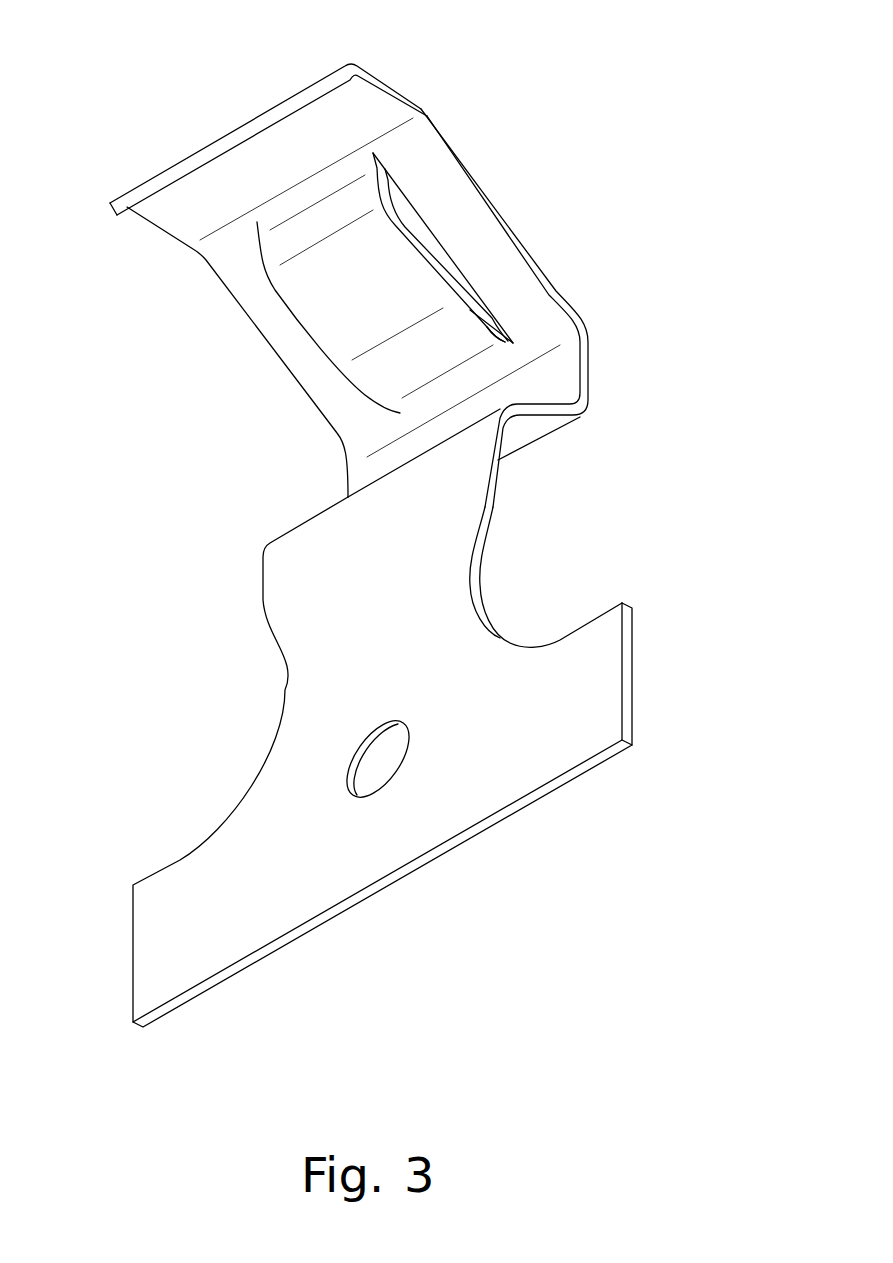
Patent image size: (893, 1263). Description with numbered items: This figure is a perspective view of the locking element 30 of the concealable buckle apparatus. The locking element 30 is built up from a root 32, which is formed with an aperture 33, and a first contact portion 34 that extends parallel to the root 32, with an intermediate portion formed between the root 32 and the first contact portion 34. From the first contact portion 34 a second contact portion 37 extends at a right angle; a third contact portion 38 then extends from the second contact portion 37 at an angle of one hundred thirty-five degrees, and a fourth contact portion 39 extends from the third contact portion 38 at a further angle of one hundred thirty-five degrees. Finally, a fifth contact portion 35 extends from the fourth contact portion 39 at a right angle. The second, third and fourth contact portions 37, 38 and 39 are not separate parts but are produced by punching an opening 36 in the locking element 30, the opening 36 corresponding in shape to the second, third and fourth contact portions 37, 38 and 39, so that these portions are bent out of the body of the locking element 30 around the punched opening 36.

The locking element 30 is at (602, 826).
The root 32 is at (453, 593).
The aperture 33 is at (377, 763).
The first contact portion 34 is at (588, 371).
The fifth contact portion 35 is at (185, 208).
The opening 36 is at (398, 203).
The second contact portion 37 is at (453, 339).
The third contact portion 38 is at (332, 325).
The fourth contact portion 39 is at (297, 238).